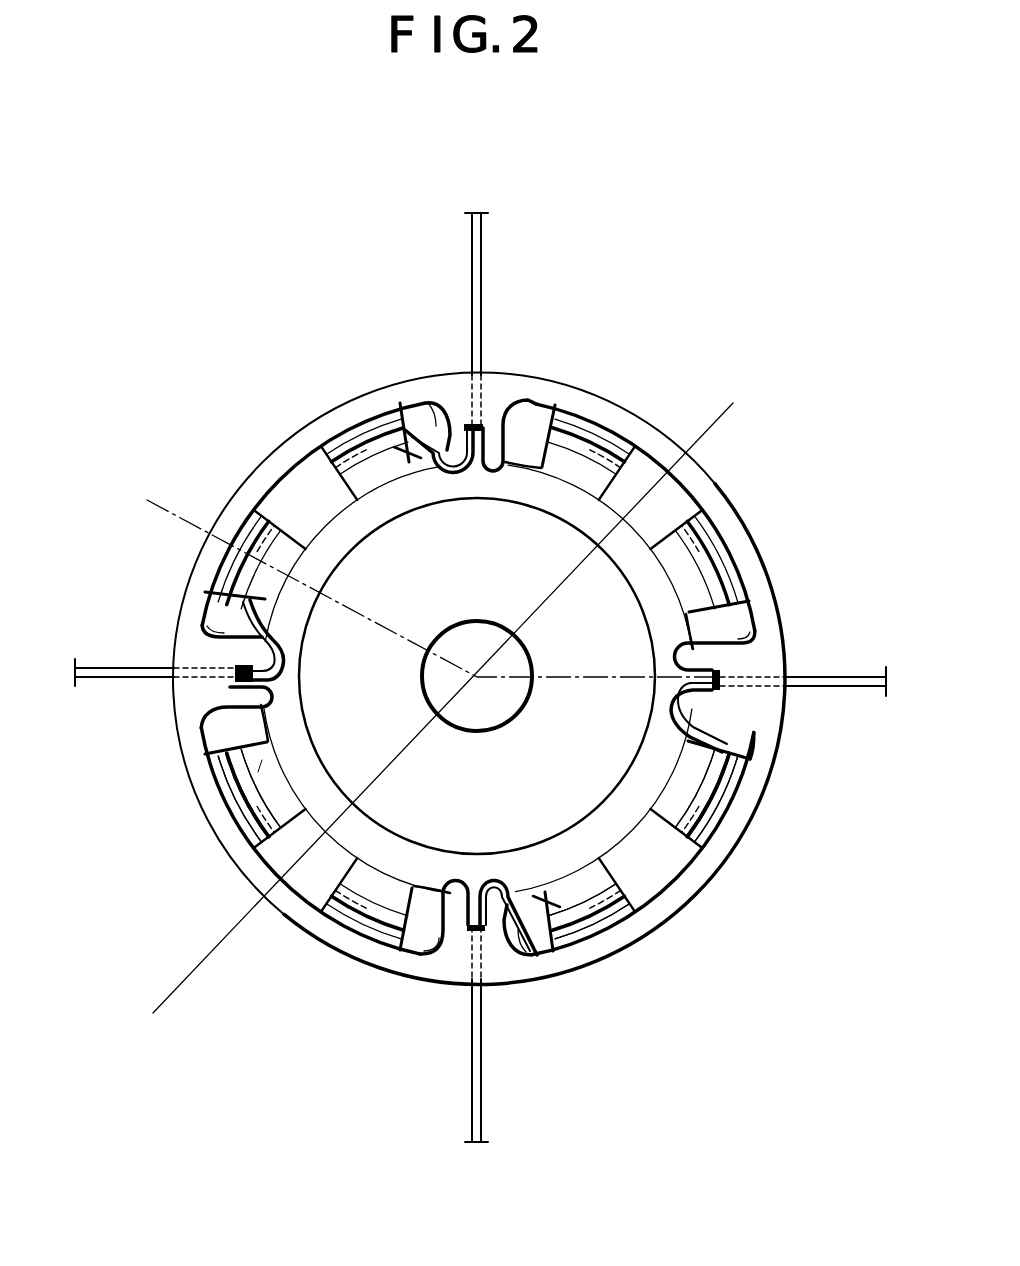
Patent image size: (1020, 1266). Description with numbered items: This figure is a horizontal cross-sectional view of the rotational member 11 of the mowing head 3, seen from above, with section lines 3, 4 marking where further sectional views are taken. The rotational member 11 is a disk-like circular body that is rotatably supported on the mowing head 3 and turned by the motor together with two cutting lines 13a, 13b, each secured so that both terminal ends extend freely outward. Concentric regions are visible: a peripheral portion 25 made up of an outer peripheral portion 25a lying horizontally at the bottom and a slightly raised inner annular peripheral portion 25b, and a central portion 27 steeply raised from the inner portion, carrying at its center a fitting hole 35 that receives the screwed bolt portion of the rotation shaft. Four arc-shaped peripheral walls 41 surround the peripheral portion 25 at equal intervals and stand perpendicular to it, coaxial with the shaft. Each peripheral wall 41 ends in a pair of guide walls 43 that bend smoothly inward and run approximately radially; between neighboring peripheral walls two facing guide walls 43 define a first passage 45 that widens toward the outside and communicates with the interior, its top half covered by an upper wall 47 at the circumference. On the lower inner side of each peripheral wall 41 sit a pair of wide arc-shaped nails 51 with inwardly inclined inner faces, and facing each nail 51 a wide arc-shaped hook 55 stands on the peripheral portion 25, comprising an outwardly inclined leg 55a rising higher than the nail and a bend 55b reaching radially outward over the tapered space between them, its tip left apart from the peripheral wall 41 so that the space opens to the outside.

The rotational member 11 is at (624, 400).
The cutting line 13a is at (490, 220).
The cutting line 13b is at (490, 1138).
The peripheral portion 25 is at (232, 933).
The outer peripheral portion 25a is at (313, 880).
The inner annular peripheral portion 25b is at (335, 890).
The central portion 27 is at (395, 548).
The fitting hole 35 is at (492, 640).
The peripheral wall 41 is at (289, 458).
The guide wall 43 is at (455, 448).
The first passage 45 is at (493, 445).
The upper wall 47 is at (258, 772).
The nail 51 is at (733, 812).
The hook 55 is at (343, 432).
The leg 55a is at (563, 887).
The bend 55b is at (603, 880).
The mowing head 3 is at (160, 521).
The section line 4- 4 is at (718, 440).